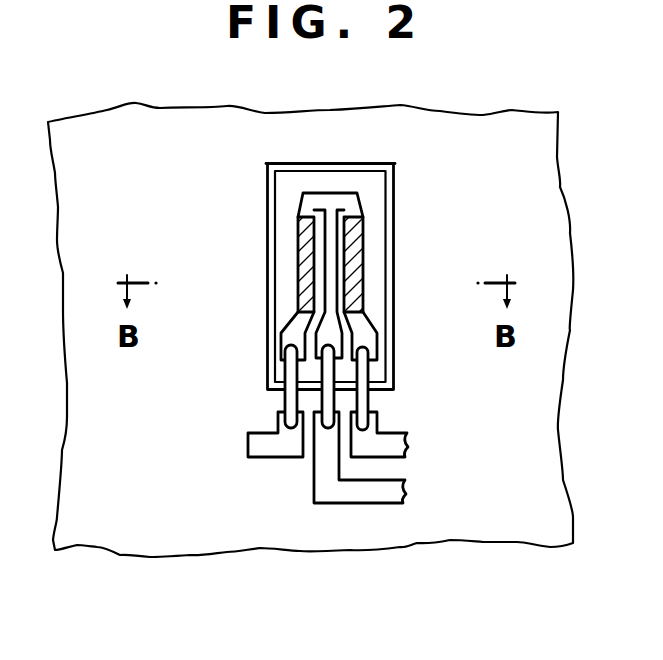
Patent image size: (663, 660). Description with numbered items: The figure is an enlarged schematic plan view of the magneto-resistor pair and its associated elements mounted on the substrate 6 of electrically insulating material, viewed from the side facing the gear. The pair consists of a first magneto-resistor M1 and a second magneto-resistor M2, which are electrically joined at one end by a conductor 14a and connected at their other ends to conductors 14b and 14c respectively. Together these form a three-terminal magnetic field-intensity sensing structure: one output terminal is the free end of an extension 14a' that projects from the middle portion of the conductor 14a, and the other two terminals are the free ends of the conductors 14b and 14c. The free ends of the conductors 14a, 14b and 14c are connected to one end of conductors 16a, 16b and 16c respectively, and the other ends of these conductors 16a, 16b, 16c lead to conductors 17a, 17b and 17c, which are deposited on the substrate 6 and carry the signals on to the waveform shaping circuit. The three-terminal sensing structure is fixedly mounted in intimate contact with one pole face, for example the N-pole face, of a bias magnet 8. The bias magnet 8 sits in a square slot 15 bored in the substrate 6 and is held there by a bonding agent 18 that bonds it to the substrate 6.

The substrate 6 is at (547, 193).
The bias magnet 8 is at (382, 192).
The conductor 14a is at (314, 173).
The extension 14a' is at (390, 284).
The conductor 14b is at (290, 318).
The conductor 14c is at (373, 336).
The slot 15 is at (393, 218).
The conductor 16a is at (336, 374).
The conductor 16b is at (287, 368).
The conductor 16c is at (368, 400).
The conductor 17a is at (337, 505).
The conductor 17b is at (268, 432).
The conductor 17c is at (400, 458).
The bonding agent 18 is at (357, 164).
The first magneto-resistor M1 is at (302, 250).
The second magneto-resistor M2 is at (362, 262).